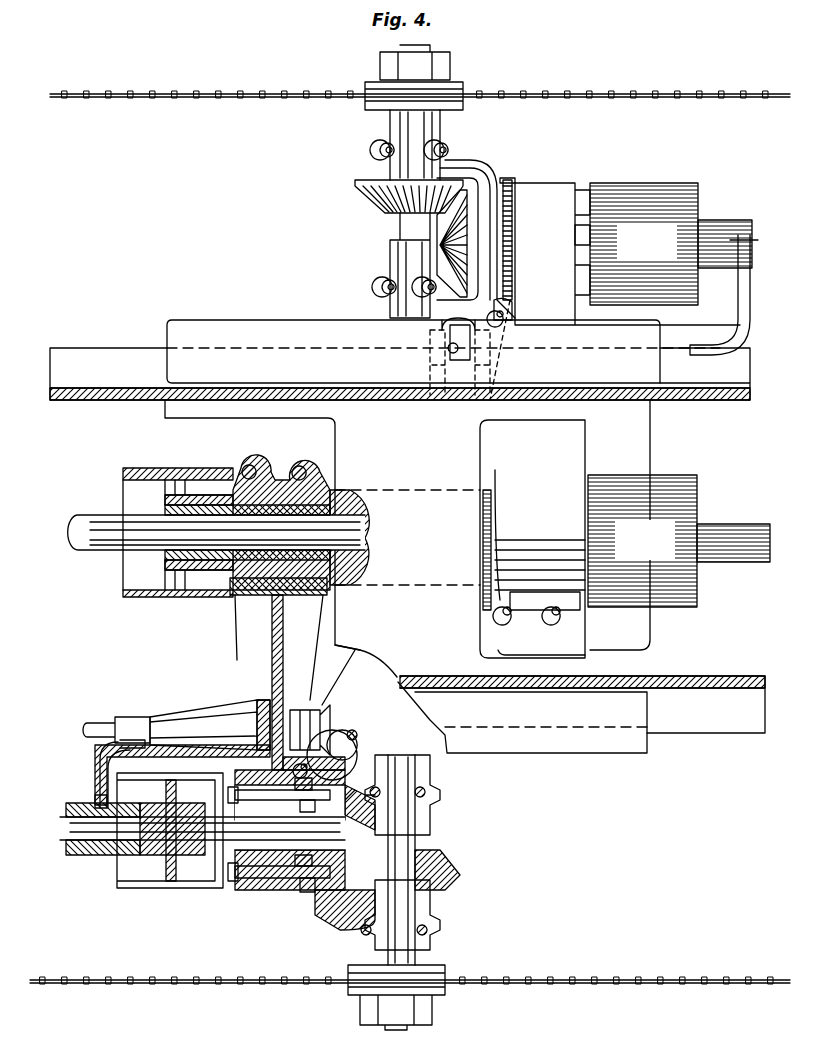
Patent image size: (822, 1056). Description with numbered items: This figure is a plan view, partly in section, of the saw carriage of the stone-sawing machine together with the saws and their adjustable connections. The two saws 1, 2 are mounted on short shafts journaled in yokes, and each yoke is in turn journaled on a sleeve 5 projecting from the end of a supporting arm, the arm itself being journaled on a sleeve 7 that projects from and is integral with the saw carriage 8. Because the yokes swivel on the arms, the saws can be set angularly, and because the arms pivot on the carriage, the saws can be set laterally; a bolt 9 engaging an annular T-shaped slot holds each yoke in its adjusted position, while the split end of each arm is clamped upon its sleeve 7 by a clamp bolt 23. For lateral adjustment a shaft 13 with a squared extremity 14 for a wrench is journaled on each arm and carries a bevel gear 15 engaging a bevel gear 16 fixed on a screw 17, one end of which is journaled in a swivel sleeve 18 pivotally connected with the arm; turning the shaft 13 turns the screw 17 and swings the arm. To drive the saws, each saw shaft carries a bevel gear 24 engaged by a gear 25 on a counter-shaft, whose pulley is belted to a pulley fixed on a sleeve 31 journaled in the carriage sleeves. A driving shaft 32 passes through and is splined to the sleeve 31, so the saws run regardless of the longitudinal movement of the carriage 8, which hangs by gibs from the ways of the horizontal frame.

The saw 1 is at (560, 978).
The saw 2 is at (640, 99).
The sleeve 5 is at (302, 866).
The sleeve 7 is at (245, 482).
The saw carriage 8 is at (407, 550).
The bolt 9 is at (250, 878).
The shaft 13 is at (172, 715).
The squared extremity 14 is at (95, 722).
The bevel gear 15 is at (346, 664).
The bevel gear 16 is at (372, 715).
The screw 17 is at (362, 730).
The swivel sleeve 18 is at (305, 718).
The clamp bolt 23 is at (258, 460).
The bevel gear 24 is at (445, 872).
The gear 25 is at (360, 798).
The sleeve 31 is at (225, 562).
The driving shaft 32 is at (95, 548).